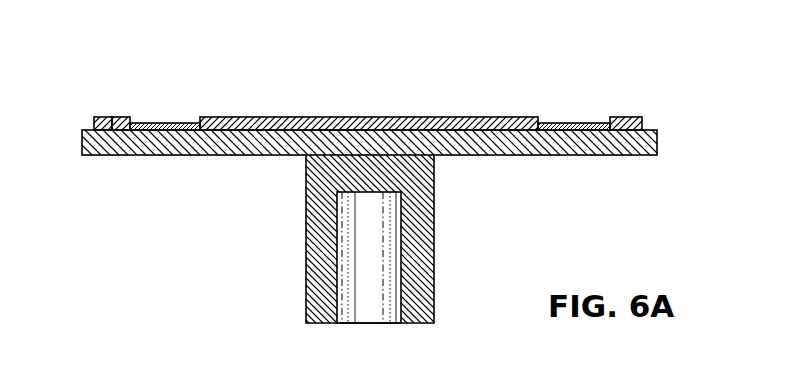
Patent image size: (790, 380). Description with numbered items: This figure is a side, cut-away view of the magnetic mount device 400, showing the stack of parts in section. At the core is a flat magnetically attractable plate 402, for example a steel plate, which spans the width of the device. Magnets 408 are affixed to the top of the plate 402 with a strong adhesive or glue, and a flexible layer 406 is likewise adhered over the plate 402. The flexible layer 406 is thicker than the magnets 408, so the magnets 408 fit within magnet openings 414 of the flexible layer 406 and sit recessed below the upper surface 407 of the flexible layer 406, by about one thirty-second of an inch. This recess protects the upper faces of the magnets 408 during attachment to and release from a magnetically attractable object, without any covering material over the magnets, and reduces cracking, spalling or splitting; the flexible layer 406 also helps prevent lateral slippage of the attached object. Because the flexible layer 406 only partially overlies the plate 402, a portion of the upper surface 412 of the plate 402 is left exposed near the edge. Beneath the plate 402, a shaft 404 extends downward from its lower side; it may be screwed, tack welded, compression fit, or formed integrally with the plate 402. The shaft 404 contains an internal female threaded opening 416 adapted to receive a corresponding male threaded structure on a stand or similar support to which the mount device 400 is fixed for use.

The mount device 400 is at (700, 112).
The magnetically attractable plate 402 is at (560, 142).
The shaft 404 is at (434, 237).
The flexible layer 406 is at (647, 117).
The upper surface of flexible layer 407 is at (452, 117).
The magnets 408 is at (157, 120).
The upper surface of plate 412 is at (112, 118).
The magnet openings 414 is at (199, 120).
The threaded opening 416 is at (400, 305).